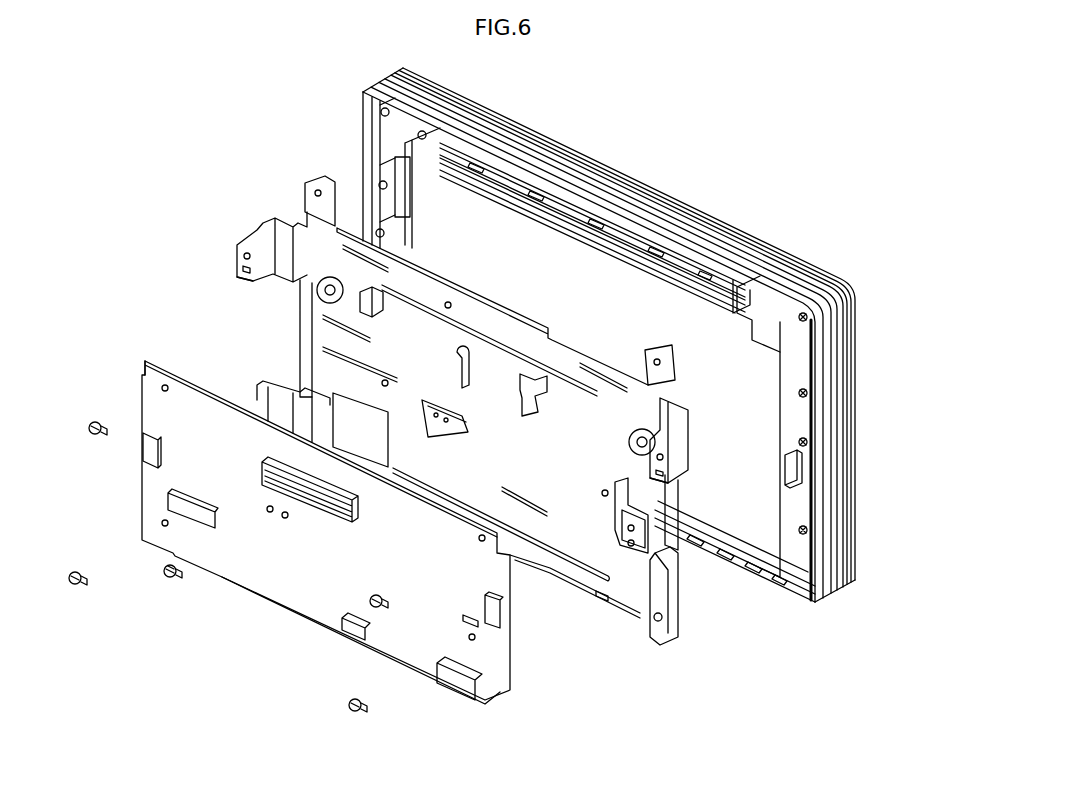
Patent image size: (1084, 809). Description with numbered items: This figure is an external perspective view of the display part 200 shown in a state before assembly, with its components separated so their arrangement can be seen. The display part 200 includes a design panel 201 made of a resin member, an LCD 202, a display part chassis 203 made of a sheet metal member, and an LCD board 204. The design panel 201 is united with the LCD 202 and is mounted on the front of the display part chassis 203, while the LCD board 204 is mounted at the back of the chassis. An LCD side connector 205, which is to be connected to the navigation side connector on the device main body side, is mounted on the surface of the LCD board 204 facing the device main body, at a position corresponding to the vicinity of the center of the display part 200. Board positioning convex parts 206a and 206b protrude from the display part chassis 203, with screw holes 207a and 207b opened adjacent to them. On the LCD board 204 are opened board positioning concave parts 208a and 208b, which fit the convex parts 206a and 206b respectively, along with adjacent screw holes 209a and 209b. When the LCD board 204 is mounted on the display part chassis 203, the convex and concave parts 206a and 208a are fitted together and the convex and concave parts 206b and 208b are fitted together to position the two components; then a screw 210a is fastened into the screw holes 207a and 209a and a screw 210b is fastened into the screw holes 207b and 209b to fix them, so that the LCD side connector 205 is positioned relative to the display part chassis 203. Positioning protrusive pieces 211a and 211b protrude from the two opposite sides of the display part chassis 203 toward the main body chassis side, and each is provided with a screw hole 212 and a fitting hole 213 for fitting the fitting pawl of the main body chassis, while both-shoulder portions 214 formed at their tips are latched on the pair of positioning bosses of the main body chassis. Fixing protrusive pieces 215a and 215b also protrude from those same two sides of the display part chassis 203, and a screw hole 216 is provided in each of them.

The display part 200 is at (713, 147).
The design panel 201 is at (592, 165).
The LCD 202 is at (585, 262).
The display part chassis 203 is at (600, 350).
The LCD board 204 is at (417, 655).
The LCD side connector 205 is at (327, 523).
The board positioning convex part 206a is at (425, 378).
The board positioning convex part 206b is at (680, 545).
The screw hole 207a is at (427, 402).
The screw hole 207b is at (668, 548).
The board positioning concave part 208a is at (283, 517).
The board positioning concave part 208b is at (478, 622).
The screw hole 209a is at (270, 512).
The screw hole 209b is at (474, 640).
The screw 210a is at (167, 575).
The screw 210b is at (356, 714).
The positioning protrusive piece 211a is at (687, 443).
The positioning protrusive piece 211b is at (268, 228).
The screw hole 212 is at (238, 252).
The fitting hole 213 is at (237, 270).
The both-shoulder portions 214 is at (252, 245).
The fixing protrusive piece 215a is at (675, 615).
The fixing protrusive piece 215b is at (257, 385).
The screw hole 216 is at (656, 636).